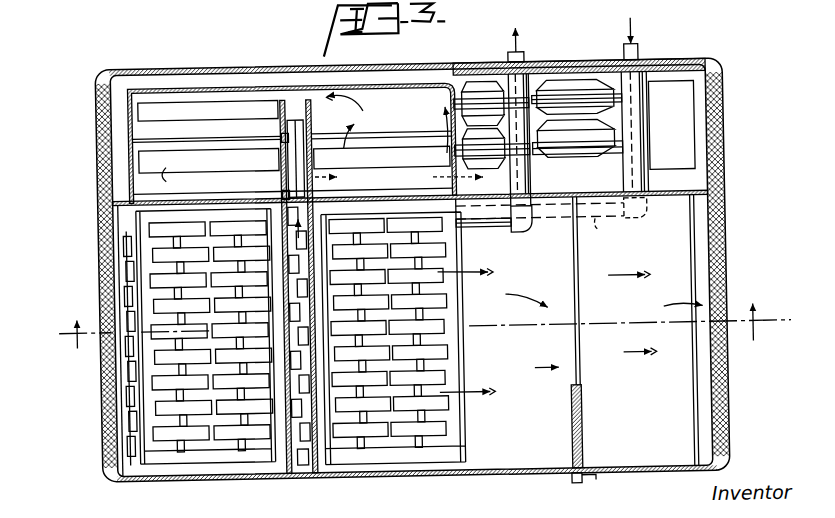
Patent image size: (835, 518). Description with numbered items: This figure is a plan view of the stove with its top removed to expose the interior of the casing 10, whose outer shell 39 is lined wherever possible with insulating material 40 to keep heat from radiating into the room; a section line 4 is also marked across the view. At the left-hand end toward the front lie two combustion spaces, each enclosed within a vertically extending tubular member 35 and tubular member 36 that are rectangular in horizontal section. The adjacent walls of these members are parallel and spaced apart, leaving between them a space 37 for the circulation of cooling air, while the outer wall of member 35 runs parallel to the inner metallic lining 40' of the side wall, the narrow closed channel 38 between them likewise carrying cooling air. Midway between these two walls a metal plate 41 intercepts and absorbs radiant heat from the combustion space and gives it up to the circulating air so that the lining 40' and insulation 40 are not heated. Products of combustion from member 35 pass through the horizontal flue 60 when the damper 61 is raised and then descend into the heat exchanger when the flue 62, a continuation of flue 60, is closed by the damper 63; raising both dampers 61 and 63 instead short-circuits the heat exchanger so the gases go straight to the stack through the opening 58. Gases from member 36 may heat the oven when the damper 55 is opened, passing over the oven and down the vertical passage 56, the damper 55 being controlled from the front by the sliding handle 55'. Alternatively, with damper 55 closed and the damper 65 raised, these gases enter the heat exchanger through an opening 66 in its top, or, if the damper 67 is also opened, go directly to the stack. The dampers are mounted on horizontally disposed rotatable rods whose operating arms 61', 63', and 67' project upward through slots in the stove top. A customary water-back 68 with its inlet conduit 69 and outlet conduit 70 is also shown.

The section line 4- 4 is at (416, 328).
The casing 10 is at (103, 112).
The tubular member 35 is at (277, 446).
The tubular member 36 is at (314, 436).
The space 37 is at (296, 465).
The channel 38 is at (119, 430).
The outer shell 39 is at (102, 167).
The insulating material 40 is at (407, 270).
The inner metallic lining 40' is at (79, 342).
The plate 41 is at (121, 388).
The damper 55 is at (596, 332).
The sliding handle 55' is at (599, 487).
The vertical passage 56 is at (705, 379).
The opening 58 is at (193, 96).
The horizontal flue 60 is at (144, 177).
The damper 61 is at (209, 173).
The operating arm 61' is at (272, 185).
The flue 62 is at (146, 125).
The damper 63 is at (206, 130).
The operating arm 63' is at (264, 129).
The damper 65 is at (384, 285).
The opening 66 is at (366, 142).
The damper 67 is at (381, 134).
The operating arm 67' is at (342, 109).
The water-back 68 is at (460, 244).
The inlet conduit 69 is at (621, 159).
The outlet conduit 70 is at (513, 232).